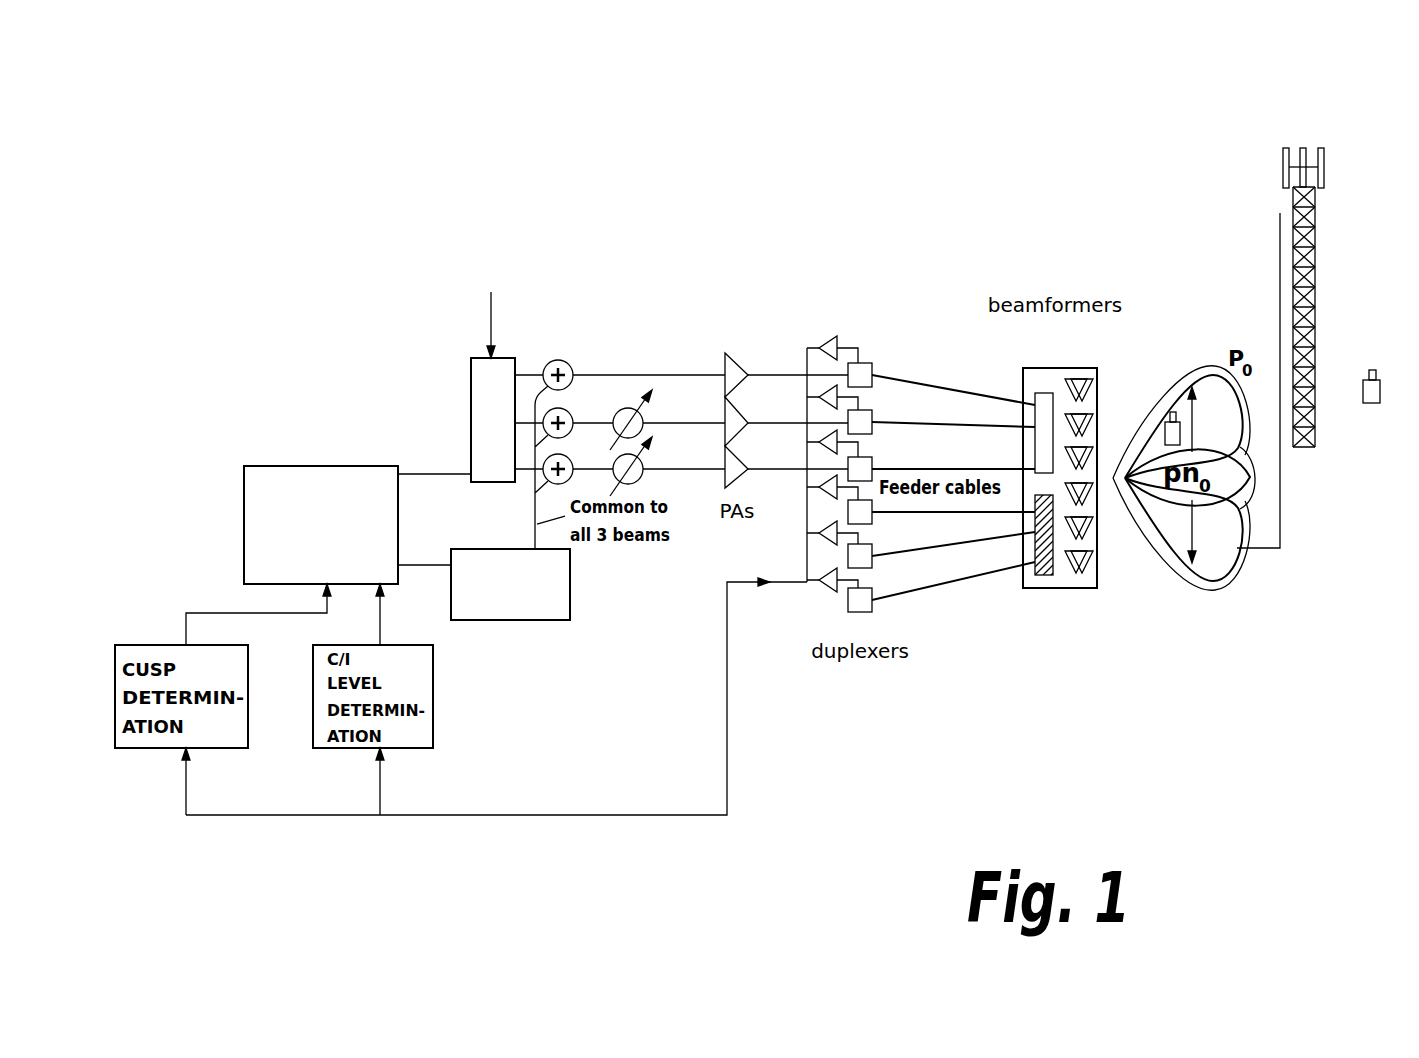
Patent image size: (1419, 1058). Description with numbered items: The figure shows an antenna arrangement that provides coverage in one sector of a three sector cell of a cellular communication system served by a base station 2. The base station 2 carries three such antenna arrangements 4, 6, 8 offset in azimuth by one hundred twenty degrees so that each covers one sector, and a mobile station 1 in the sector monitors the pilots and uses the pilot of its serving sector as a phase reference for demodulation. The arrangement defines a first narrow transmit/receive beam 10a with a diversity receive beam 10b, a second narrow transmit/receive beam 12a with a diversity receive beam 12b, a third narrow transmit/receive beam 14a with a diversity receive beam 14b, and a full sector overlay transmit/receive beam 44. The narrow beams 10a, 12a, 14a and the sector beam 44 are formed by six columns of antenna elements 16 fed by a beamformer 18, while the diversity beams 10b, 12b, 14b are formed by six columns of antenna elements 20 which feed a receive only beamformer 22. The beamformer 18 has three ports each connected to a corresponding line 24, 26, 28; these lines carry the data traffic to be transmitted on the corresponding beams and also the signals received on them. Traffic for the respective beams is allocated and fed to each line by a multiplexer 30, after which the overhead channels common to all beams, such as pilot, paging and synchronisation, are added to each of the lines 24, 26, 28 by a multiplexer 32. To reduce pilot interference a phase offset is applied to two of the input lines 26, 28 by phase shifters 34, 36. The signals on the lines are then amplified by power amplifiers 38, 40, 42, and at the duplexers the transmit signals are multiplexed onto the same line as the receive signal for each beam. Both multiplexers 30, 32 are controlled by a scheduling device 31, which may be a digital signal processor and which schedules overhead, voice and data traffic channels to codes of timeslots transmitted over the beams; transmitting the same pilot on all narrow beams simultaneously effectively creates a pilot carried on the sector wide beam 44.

The mobile station 1 is at (1366, 372).
The base station 2 is at (1332, 200).
The antenna arrangement 4 is at (1282, 157).
The antenna arrangement 6 is at (1302, 148).
The antenna arrangement 8 is at (1323, 150).
The first narrow transmit/receive beam 10a is at (1210, 395).
The diversity receive beam 10b is at (1228, 385).
The second narrow transmit/receive beam 12a is at (1228, 472).
The diversity receive beam 12b is at (1247, 485).
The third narrow transmit/receive beam 14a is at (1212, 563).
The diversity receive beam 14b is at (1233, 553).
The antenna elements 16 is at (1066, 486).
The beamformer 18 is at (1040, 402).
The antenna elements 20 is at (1093, 437).
The receive only beamformer 22 is at (1040, 565).
The line 24 is at (887, 375).
The line 26 is at (908, 420).
The line 28 is at (947, 467).
The multiplexer 30 is at (470, 410).
The scheduling device 31 is at (289, 464).
The multiplexer 32 is at (540, 620).
The phase shifter 34 is at (641, 427).
The phase shifter 36 is at (643, 477).
The power amplifier 38 is at (725, 355).
The power amplifier 40 is at (738, 418).
The power amplifier 42 is at (738, 468).
The full sector overlay transmit/receive beam 44 is at (1232, 520).